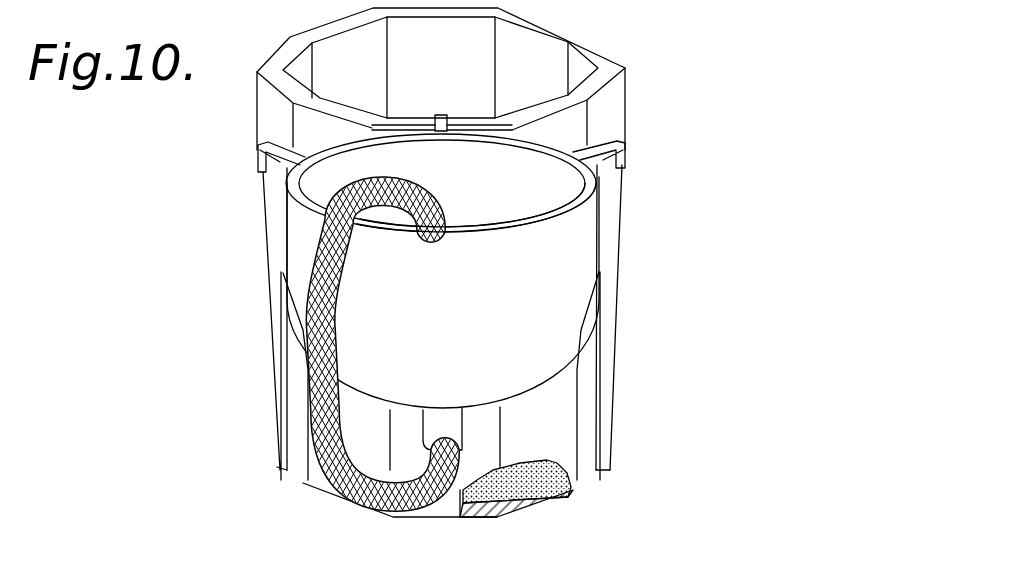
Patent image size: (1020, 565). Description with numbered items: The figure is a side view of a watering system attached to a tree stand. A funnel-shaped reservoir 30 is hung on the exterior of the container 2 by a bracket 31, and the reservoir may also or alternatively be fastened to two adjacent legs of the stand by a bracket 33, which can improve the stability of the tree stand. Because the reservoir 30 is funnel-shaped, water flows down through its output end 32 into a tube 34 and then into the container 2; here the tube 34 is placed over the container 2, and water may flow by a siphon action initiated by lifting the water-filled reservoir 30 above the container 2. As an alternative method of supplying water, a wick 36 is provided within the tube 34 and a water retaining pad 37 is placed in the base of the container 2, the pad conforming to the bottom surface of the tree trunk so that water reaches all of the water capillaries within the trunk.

The container 2 is at (615, 212).
The reservoir 30 is at (484, 310).
The bracket 31 is at (445, 115).
The output end 32 is at (452, 430).
The bracket 33 is at (265, 168).
The tube 34 is at (352, 490).
The wick 36 is at (322, 298).
The water retaining pad 37 is at (546, 502).